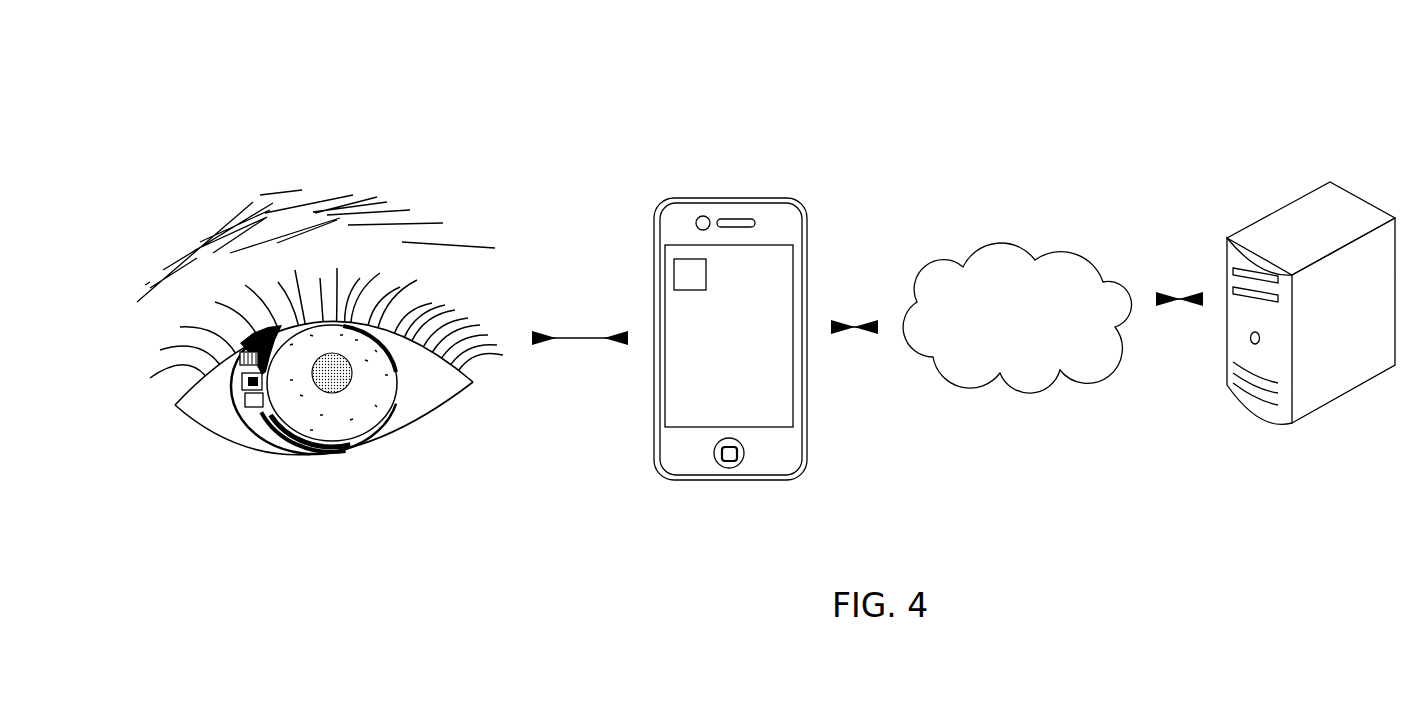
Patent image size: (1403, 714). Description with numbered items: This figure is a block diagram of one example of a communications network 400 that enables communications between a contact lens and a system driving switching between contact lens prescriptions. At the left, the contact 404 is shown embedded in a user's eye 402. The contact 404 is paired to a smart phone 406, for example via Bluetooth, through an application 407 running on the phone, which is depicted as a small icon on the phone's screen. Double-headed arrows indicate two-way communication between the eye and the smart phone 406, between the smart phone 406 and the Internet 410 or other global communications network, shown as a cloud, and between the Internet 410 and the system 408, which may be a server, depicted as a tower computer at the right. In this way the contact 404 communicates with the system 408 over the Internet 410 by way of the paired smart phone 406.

The communications network 400 is at (1150, 87).
The user's eye 402 is at (197, 412).
The contact 404 is at (260, 423).
The smart phone 406 is at (753, 348).
The application 407 is at (688, 267).
The system 408 is at (1362, 328).
The Internet 410 is at (1036, 330).